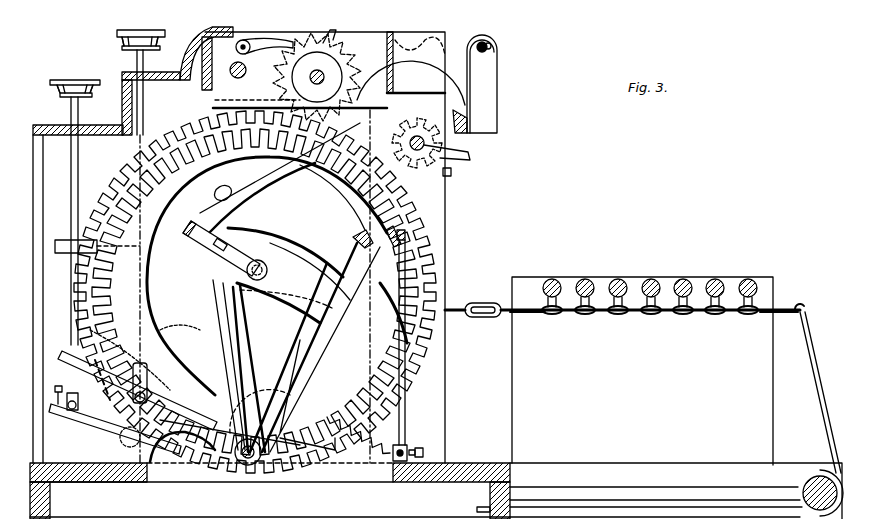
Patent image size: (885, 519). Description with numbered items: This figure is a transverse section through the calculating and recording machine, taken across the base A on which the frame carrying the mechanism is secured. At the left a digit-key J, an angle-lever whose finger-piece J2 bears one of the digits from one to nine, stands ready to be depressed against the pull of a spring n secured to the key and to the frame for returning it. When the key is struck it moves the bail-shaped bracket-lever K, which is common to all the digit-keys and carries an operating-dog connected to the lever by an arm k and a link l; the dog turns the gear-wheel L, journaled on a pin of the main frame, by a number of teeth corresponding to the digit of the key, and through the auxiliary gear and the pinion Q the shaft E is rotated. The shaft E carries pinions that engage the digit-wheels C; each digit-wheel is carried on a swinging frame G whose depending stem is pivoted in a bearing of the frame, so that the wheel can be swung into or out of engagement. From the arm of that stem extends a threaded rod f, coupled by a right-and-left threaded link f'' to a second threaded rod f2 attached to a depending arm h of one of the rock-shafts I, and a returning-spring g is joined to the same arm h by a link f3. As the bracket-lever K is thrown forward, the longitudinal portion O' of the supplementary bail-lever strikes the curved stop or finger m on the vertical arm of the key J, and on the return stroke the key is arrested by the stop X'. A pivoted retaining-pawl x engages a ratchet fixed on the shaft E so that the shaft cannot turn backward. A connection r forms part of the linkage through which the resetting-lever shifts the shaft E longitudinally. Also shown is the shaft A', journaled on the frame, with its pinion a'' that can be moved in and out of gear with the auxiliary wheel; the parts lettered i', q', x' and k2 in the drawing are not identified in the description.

The base A is at (436, 483).
The returning-spring g is at (825, 400).
The threaded rod f is at (540, 369).
The right and left threaded link f'' is at (483, 327).
The threaded rod f2 is at (538, 306).
The link f3 is at (765, 320).
The rock-shafts I is at (718, 279).
The depending arm h is at (730, 335).
The finger-pieces J2 is at (118, 45).
The ring gear i' is at (255, 292).
The shaft E is at (317, 77).
The pinion Q is at (275, 72).
The retaining-pawl x is at (264, 30).
The pawl q' is at (336, 29).
The digit-wheels C is at (449, 43).
The swinging frame G is at (489, 84).
The longitudinal portion of the bail-lever O' is at (350, 117).
The shaft A' is at (445, 139).
The pinion a'' is at (437, 176).
The link l is at (230, 282).
The curved stop or finger m is at (289, 275).
The bail-shaped bracket-lever K is at (352, 230).
The lever arms x' is at (296, 354).
The gear-wheel L is at (150, 313).
The dashed link k2 is at (130, 348).
The arm k is at (225, 405).
The spring n is at (268, 370).
The connection r is at (372, 438).
The stop X' is at (414, 334).
The digit-keys J is at (133, 399).